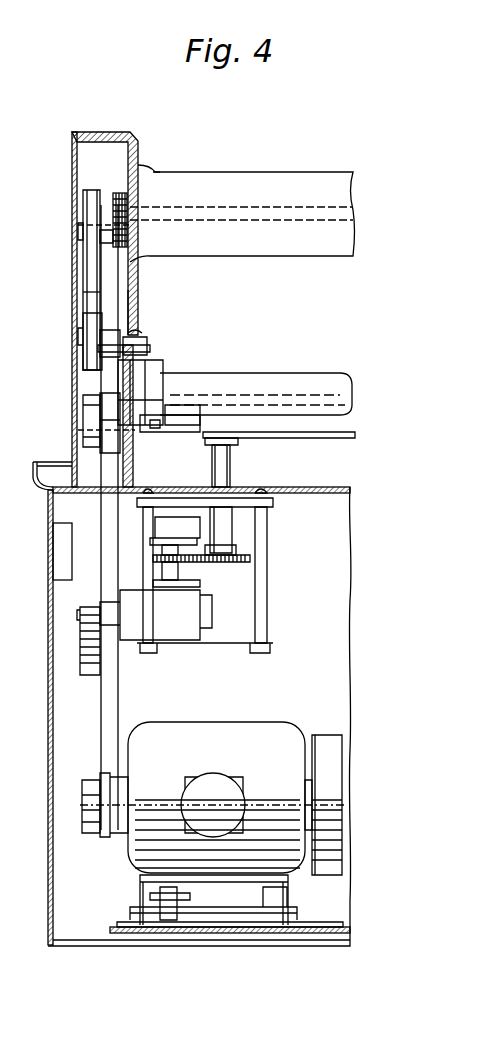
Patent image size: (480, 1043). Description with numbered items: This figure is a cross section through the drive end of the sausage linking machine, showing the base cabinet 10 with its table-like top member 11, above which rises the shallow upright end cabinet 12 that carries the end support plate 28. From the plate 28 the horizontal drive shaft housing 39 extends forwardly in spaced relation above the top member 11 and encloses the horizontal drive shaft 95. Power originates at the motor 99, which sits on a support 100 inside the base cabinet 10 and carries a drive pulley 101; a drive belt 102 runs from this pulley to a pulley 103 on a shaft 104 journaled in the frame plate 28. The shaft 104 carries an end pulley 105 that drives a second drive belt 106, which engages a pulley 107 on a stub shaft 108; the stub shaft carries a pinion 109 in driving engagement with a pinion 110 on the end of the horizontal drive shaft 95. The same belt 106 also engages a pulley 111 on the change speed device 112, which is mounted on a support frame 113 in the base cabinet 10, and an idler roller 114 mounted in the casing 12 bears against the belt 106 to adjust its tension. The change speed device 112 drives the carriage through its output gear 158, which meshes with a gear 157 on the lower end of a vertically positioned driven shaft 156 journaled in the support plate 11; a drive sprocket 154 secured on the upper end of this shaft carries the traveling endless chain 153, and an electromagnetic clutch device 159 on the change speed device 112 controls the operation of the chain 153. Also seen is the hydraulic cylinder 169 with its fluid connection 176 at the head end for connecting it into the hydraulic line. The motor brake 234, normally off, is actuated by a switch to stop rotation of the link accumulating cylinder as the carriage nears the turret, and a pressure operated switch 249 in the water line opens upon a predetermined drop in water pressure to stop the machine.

The base cabinet 10 is at (340, 561).
The top member 11 is at (318, 490).
The upright end cabinet 12 is at (96, 131).
The end support plate 28 is at (140, 297).
The drive shaft housing 39 is at (262, 185).
The horizontal drive shaft 95 is at (176, 205).
The motor 99 is at (215, 730).
The support 100 is at (290, 895).
The drive pulley 101 is at (97, 830).
The drive belt 102 is at (118, 692).
The pulley 103 is at (96, 428).
The shaft 104 is at (185, 425).
The end pulley 105 is at (84, 400).
The drive belt 106 is at (84, 297).
The pulley 107 is at (84, 205).
The stub shaft 108 is at (107, 225).
The pinion 109 is at (150, 256).
The pinion 110 is at (138, 172).
The pulley 111 is at (86, 673).
The change speed device 112 is at (180, 635).
The support frame 113 is at (262, 615).
The idler roller 114 is at (83, 322).
The traveling endless chain 153 is at (340, 438).
The drive sprocket 154 is at (210, 465).
The driven shaft 156 is at (236, 466).
The gear 157 is at (240, 565).
The output gear 158 is at (178, 556).
The electromagnetic clutch device 159 is at (175, 551).
The hydraulic cylinder 169 is at (240, 375).
The fluid connection 176 is at (165, 430).
The motor brake 234 is at (330, 735).
The pressure operated switch 249 is at (60, 556).